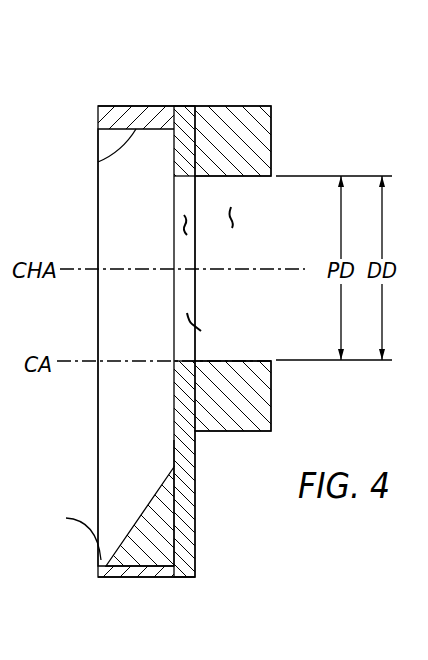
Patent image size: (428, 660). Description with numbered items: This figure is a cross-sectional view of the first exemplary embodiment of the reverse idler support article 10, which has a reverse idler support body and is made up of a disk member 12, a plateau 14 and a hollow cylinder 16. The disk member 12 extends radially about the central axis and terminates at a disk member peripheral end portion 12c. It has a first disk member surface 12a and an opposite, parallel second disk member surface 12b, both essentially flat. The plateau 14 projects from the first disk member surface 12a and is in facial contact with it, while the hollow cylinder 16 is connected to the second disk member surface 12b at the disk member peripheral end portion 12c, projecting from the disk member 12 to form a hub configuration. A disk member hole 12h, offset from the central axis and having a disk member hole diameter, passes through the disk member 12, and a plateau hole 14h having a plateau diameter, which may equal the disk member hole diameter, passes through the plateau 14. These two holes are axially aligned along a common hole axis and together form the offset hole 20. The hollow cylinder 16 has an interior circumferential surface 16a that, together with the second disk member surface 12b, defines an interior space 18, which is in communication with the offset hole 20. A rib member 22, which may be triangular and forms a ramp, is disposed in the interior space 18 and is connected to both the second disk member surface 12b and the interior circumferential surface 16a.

The reverse idler support article 10 is at (202, 80).
The disk member 12 is at (195, 520).
The first disk member surface 12a is at (195, 553).
The second disk member surface 12b is at (174, 452).
The disk member peripheral end portion 12c is at (186, 105).
The disk member hole 12h is at (182, 226).
The plateau 14 is at (272, 395).
The plateau hole 14h is at (233, 215).
The hollow cylinder 16 is at (141, 578).
The interior circumferential surface 16a is at (98, 162).
The interior space 18 is at (148, 323).
The offset hole 20 is at (201, 325).
The rib member 22 is at (143, 517).